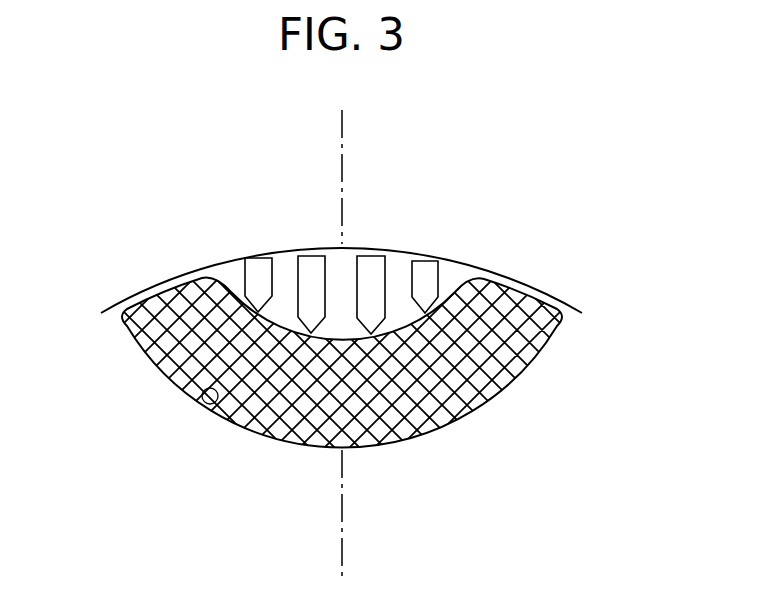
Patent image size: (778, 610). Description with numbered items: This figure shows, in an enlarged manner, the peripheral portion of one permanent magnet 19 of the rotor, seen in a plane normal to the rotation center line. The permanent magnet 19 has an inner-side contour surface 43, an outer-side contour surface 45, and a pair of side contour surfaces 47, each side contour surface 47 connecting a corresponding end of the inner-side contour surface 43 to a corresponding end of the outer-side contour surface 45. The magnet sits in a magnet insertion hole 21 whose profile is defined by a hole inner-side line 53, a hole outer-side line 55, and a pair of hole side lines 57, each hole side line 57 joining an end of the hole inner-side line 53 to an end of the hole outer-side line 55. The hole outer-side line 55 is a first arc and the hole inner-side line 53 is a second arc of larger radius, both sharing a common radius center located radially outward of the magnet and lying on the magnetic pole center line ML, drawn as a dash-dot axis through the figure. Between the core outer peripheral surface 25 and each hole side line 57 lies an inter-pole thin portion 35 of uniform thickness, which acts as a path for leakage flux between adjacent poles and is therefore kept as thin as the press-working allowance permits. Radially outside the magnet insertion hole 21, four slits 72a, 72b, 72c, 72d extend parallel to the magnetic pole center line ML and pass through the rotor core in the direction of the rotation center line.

The magnetic pole center line ML is at (342, 140).
The side contour surfaces 47 is at (101, 312).
The inner-side contour surface 43 is at (484, 404).
The slit 72a is at (313, 265).
The slit 72b is at (370, 265).
The slit 72c is at (259, 267).
The slit 72d is at (428, 267).
The core outer peripheral surface 25 is at (231, 274).
The outer-side contour surface 45 is at (220, 272).
The inter-pole thin portions 35 is at (152, 289).
The hole side lines 57 is at (165, 288).
The magnet insertion hole 21 is at (508, 310).
The permanent magnet 19 is at (536, 300).
The hole outer-side line 55 is at (240, 313).
The hole inner-side line 53 is at (195, 405).